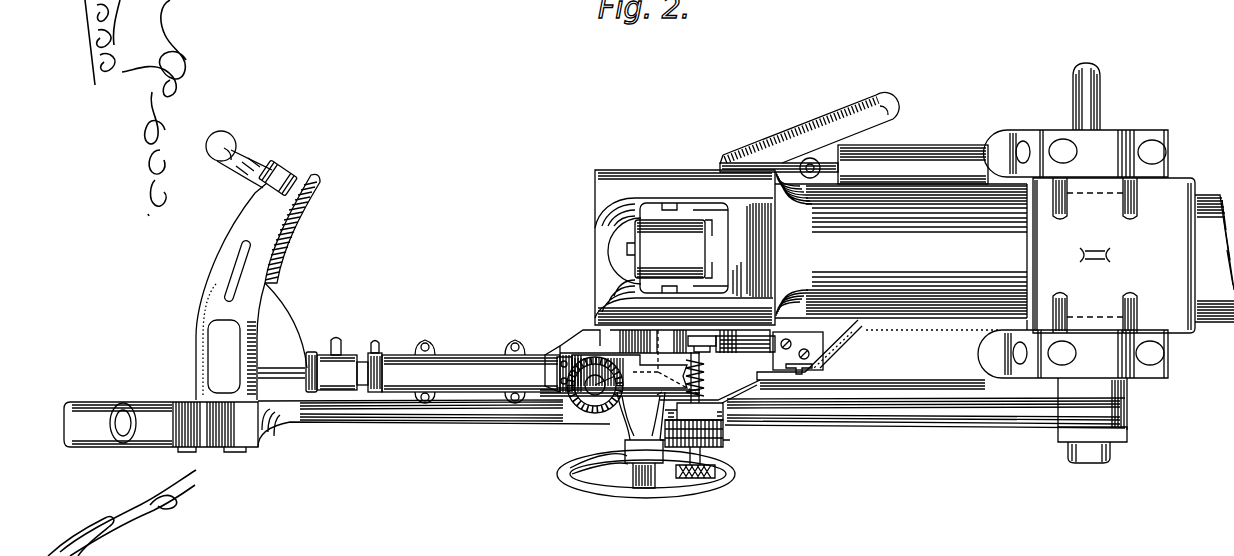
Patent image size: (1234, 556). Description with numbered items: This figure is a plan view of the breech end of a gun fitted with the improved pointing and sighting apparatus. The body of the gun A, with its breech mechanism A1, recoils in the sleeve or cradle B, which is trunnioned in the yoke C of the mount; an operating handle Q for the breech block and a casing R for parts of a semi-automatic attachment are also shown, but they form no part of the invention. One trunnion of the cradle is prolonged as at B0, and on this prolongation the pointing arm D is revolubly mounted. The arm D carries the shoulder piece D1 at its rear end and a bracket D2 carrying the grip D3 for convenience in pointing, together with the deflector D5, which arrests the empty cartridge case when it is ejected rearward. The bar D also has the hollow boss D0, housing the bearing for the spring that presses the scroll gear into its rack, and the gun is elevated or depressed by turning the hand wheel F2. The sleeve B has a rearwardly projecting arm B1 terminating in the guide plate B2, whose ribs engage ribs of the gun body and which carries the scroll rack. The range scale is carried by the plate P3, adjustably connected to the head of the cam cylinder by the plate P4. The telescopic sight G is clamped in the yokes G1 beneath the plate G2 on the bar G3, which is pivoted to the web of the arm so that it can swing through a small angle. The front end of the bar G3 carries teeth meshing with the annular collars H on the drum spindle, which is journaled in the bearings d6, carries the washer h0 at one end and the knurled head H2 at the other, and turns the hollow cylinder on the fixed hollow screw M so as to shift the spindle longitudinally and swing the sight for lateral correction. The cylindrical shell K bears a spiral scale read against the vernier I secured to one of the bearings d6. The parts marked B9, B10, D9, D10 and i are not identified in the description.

The body of the gun A is at (811, 247).
The breech mechanism A1 is at (677, 248).
The sleeve or cradle B is at (1133, 304).
The rearwardly projecting arm B1 is at (944, 333).
The prolonged trunnion B0 is at (1112, 455).
The guide plate B2 is at (745, 338).
The inclined web B9 is at (828, 352).
The frame bracket B10 is at (662, 326).
The yoke C is at (1083, 220).
The pointing arm D is at (925, 405).
The shoulder piece D1 is at (125, 404).
The bracket D2 is at (213, 283).
The grip D3 is at (234, 142).
The deflector D5 is at (283, 252).
The guide block D9 is at (799, 372).
The neck D10 is at (641, 440).
The hollow boss D0 is at (648, 412).
The hand wheel F2 is at (636, 492).
The telescopic sight G is at (342, 352).
The yokes G1 is at (428, 343).
The plate G2 is at (386, 356).
The bar G3 is at (557, 345).
The annular collars H is at (692, 372).
The knurled head H2 is at (698, 479).
The vernier I is at (694, 411).
The cylindrical shell K is at (727, 445).
The hollow screw M is at (748, 392).
The range scale plate P3 is at (596, 390).
The plate P4 is at (595, 410).
The operating handle Q is at (843, 106).
The casing R is at (930, 148).
The bearings d6 is at (716, 366).
The washer h0 is at (715, 338).
The pin i is at (723, 424).